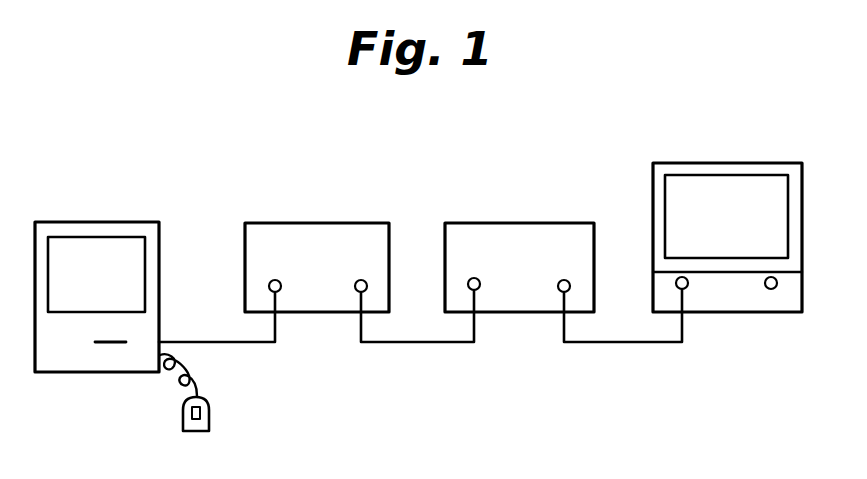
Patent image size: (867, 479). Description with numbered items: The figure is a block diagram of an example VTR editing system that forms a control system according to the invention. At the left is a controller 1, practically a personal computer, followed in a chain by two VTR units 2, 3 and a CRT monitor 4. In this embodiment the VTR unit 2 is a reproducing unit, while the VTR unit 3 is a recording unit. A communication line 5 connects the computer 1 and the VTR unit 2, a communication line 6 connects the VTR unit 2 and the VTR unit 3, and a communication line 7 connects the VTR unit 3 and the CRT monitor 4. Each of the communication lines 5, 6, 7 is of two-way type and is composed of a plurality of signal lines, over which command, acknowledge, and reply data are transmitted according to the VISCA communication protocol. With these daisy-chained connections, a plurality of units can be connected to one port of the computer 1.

The controller 1 is at (93, 221).
The VTR unit 2 is at (316, 222).
The VTR unit 3 is at (507, 222).
The CRT monitor 4 is at (652, 184).
The communication line 5 is at (262, 343).
The communication line 6 is at (418, 343).
The communication line 7 is at (624, 343).